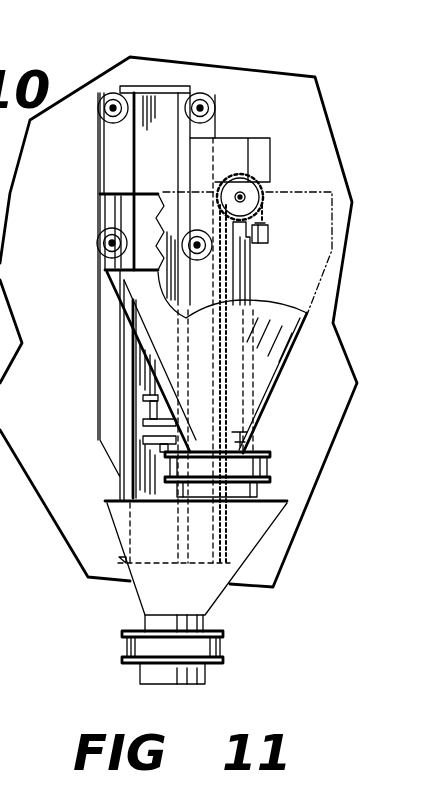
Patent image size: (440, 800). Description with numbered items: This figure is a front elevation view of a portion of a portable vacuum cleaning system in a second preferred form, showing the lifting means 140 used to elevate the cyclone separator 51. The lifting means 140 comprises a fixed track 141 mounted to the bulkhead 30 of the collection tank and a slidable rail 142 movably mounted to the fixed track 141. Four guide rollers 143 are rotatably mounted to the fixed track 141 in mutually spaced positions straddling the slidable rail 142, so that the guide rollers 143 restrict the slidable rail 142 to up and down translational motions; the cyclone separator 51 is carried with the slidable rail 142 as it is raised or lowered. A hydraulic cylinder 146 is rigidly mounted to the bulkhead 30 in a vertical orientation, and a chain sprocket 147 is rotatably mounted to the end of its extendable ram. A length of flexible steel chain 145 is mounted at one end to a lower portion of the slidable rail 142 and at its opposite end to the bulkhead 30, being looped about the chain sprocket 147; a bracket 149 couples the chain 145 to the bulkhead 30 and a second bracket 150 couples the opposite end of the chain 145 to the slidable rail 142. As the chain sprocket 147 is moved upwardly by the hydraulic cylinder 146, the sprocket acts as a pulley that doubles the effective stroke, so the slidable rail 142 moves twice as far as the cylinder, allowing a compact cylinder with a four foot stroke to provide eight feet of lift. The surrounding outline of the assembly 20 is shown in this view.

The dispensing apparatus 20 is at (258, 49).
The bulkhead 30 is at (307, 74).
The cyclone separator 51 is at (298, 364).
The lifting means 140 is at (78, 222).
The fixed track 141 is at (98, 322).
The slidable rail 142 is at (126, 369).
The guide rollers 143 is at (100, 117).
The steel chain 145 is at (263, 203).
The hydraulic cylinder 146 is at (252, 289).
The chain sprocket 147 is at (254, 180).
The bracket 149 is at (269, 243).
The second bracket 150 is at (212, 570).